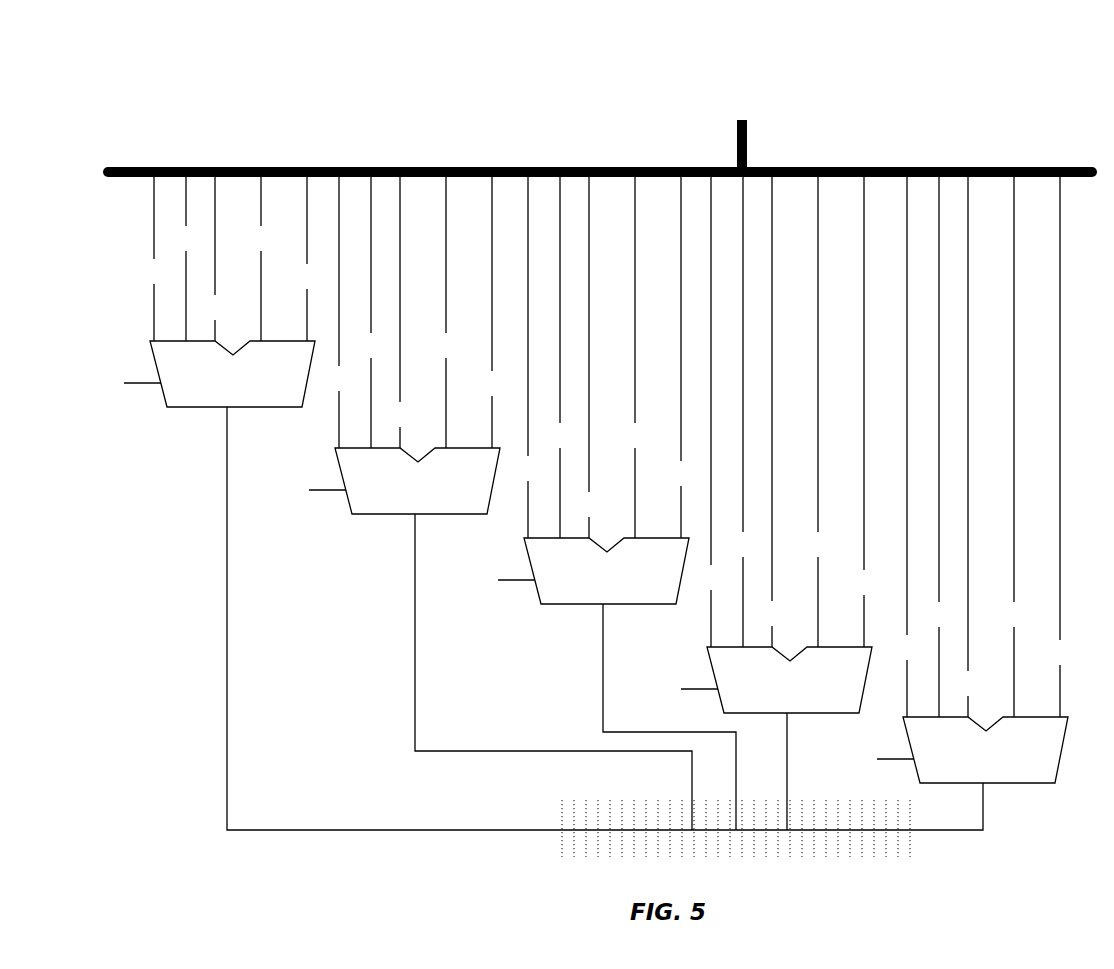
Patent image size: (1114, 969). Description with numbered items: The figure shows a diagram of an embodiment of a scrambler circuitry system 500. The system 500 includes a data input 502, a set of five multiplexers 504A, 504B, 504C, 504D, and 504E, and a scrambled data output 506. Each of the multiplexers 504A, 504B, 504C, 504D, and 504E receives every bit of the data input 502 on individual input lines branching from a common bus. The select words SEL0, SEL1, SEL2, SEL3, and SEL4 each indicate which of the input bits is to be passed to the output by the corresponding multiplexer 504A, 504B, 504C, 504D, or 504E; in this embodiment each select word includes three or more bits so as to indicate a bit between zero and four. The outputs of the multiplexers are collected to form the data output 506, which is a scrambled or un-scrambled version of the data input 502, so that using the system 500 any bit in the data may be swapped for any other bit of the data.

The scrambler circuitry system 500 is at (70, 63).
The data input 502 is at (912, 104).
The multiplexer 504A is at (240, 407).
The multiplexer 504B is at (425, 514).
The multiplexer 504C is at (614, 604).
The multiplexer 504D is at (797, 713).
The multiplexer 504E is at (993, 783).
The scrambled data output 506 is at (578, 811).